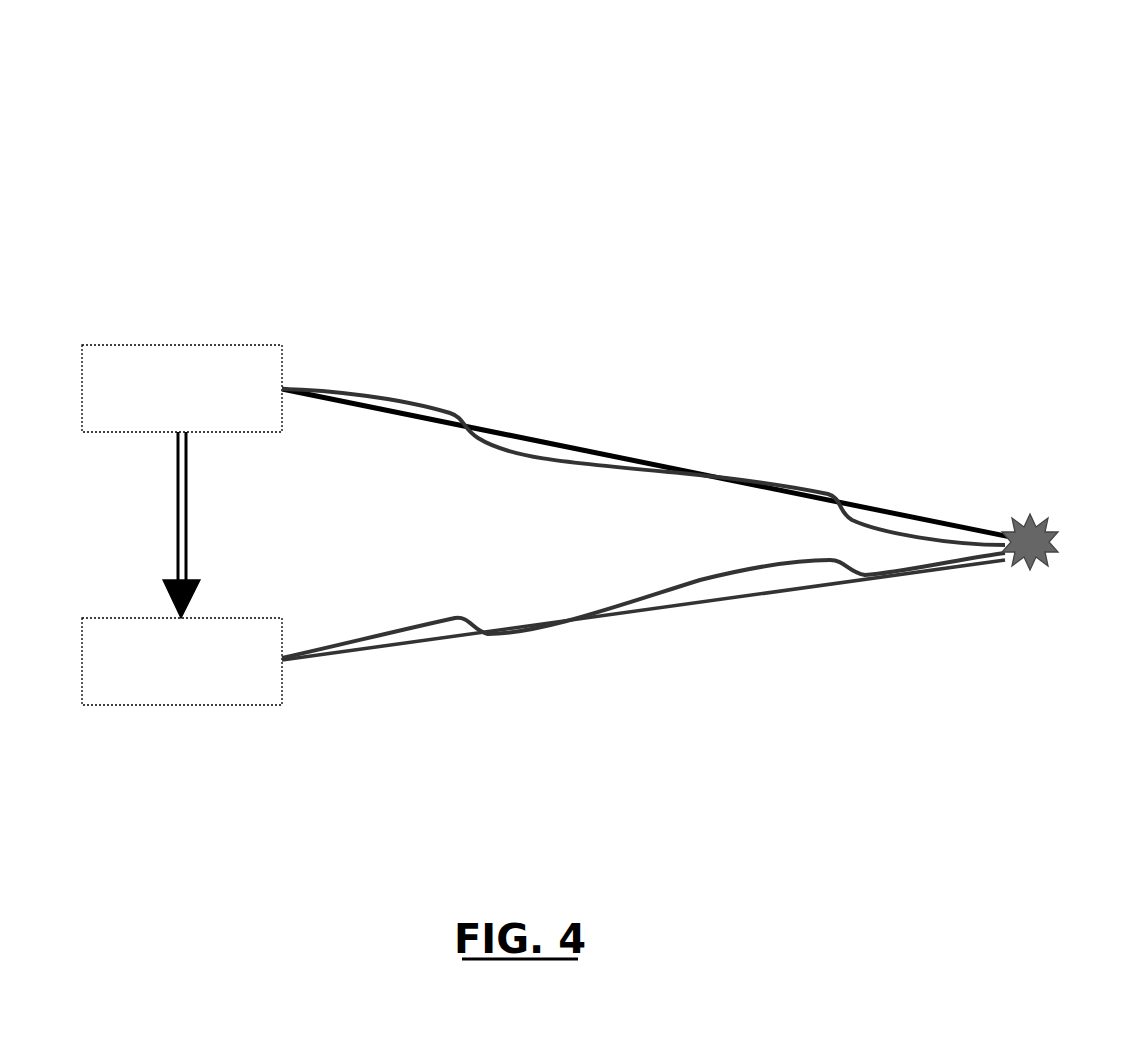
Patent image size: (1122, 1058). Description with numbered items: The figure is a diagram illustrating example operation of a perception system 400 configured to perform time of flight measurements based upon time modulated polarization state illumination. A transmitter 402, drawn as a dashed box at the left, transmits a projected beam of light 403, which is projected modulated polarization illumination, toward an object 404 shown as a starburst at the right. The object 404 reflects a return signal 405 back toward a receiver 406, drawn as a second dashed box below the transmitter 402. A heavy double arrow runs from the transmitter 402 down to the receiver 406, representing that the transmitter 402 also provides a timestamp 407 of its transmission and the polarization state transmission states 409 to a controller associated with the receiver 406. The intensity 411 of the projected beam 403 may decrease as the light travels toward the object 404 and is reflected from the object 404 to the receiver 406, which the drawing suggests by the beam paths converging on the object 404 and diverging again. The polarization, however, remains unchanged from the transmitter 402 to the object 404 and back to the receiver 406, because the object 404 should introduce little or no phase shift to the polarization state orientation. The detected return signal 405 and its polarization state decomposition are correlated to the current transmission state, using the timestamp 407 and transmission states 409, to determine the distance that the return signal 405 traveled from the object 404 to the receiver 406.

The lidar system 400 is at (968, 84).
The transmitter 402 is at (182, 388).
The projected beam of light 403 is at (531, 460).
The object 404 is at (1060, 528).
The return signal 405 is at (718, 576).
The receiver 406 is at (182, 661).
The timestamp 407 is at (171, 492).
The polarization state transmission states 409 is at (190, 494).
The intensity 411 is at (597, 434).